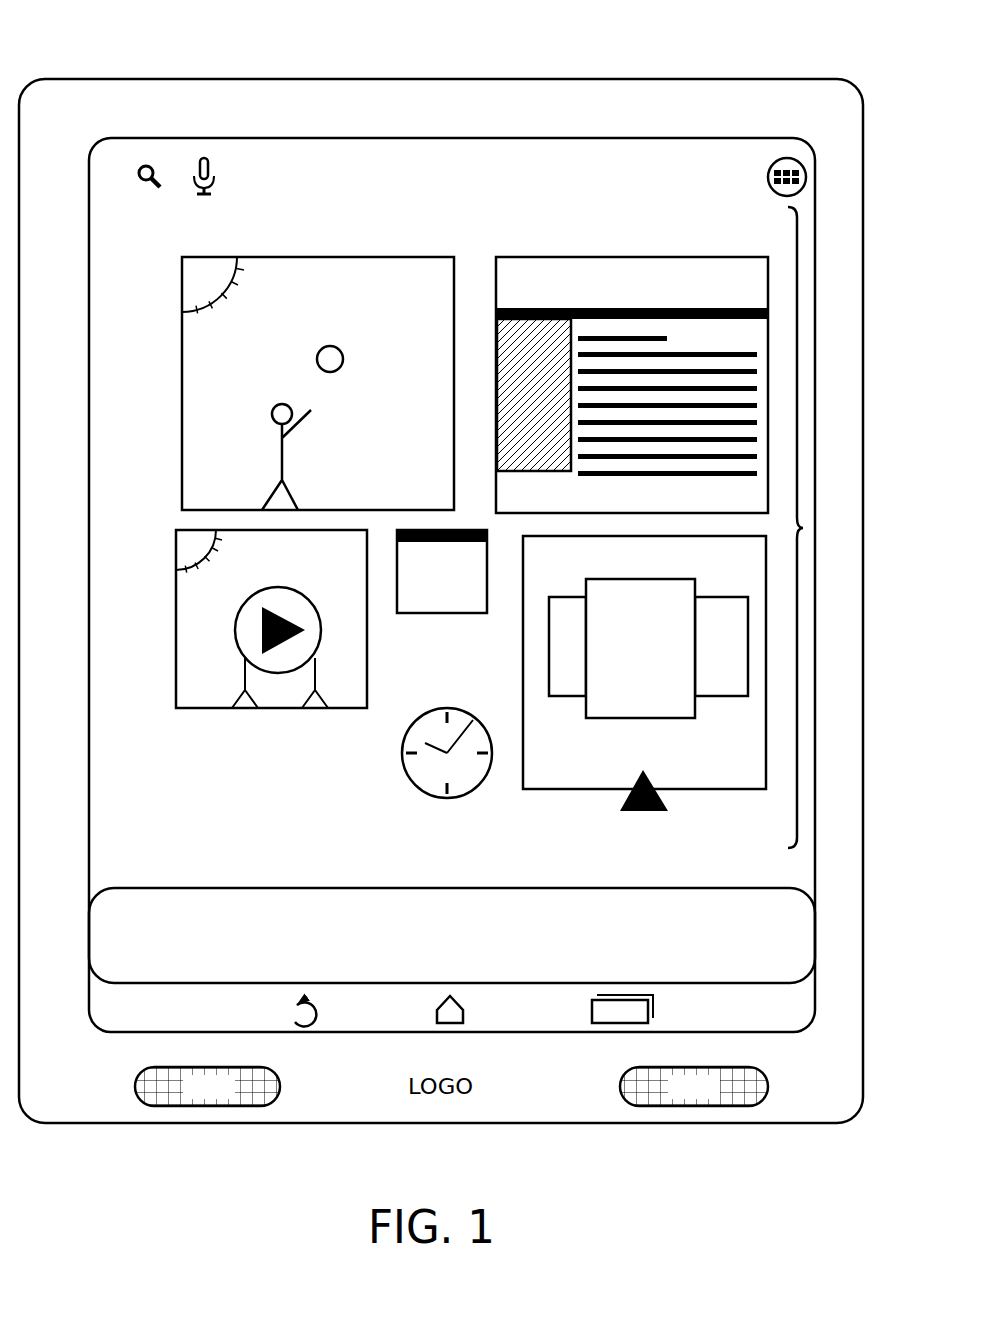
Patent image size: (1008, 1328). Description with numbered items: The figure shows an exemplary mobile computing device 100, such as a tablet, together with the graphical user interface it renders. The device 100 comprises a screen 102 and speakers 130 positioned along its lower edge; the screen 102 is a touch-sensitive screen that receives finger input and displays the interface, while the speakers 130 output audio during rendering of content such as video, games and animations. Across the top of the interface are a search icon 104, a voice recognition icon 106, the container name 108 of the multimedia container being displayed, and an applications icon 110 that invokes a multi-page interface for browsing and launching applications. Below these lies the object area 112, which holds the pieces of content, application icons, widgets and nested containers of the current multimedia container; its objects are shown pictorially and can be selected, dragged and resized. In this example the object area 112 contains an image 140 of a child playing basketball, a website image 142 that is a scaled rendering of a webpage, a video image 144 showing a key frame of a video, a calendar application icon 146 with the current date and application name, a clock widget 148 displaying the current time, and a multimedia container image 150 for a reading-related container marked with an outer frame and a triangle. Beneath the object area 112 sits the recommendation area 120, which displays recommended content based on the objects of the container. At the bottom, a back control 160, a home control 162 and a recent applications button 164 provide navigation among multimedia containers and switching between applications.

The device 100 is at (101, 77).
The screen 102 is at (591, 134).
The search icon 104 is at (146, 157).
The voice recognition icon 106 is at (205, 151).
The container name 108 is at (474, 155).
The applications icon 110 is at (787, 155).
The object area 112 is at (810, 528).
The recommendation area 120 is at (433, 960).
The speakers 130 is at (451, 1086).
The image 140 is at (320, 253).
The website image 142 is at (636, 253).
The video image 144 is at (277, 716).
The application icon 146 is at (434, 660).
The widget 148 is at (449, 809).
The multimedia container image 150 is at (687, 803).
The back control 160 is at (328, 1013).
The home control 162 is at (479, 1013).
The recent applications button 164 is at (659, 1013).